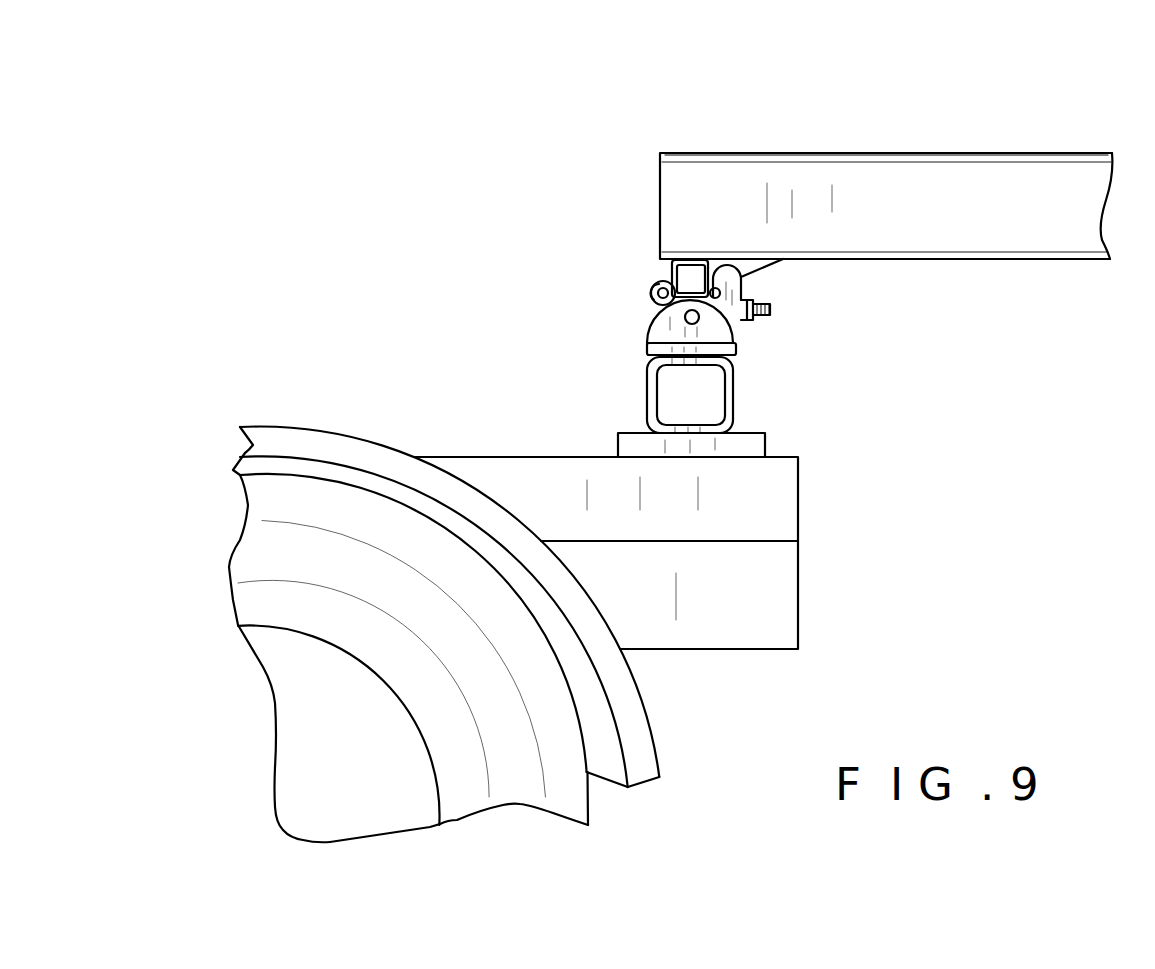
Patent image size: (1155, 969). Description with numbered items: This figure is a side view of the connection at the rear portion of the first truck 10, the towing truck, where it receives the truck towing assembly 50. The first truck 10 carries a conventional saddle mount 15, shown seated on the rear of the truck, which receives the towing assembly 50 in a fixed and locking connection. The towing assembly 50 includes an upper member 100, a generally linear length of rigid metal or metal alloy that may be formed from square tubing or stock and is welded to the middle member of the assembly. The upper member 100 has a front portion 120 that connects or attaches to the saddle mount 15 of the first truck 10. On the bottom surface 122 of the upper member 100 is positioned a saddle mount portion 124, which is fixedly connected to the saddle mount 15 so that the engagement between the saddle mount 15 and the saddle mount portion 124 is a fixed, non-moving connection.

The first truck 10 is at (335, 431).
The saddle mount 15 is at (733, 336).
The truck towing assembly 50 is at (990, 108).
The upper member 100 is at (1045, 152).
The front portion 120 is at (726, 153).
The bottom surface 122 is at (805, 260).
The saddle mount portion 124 is at (672, 270).